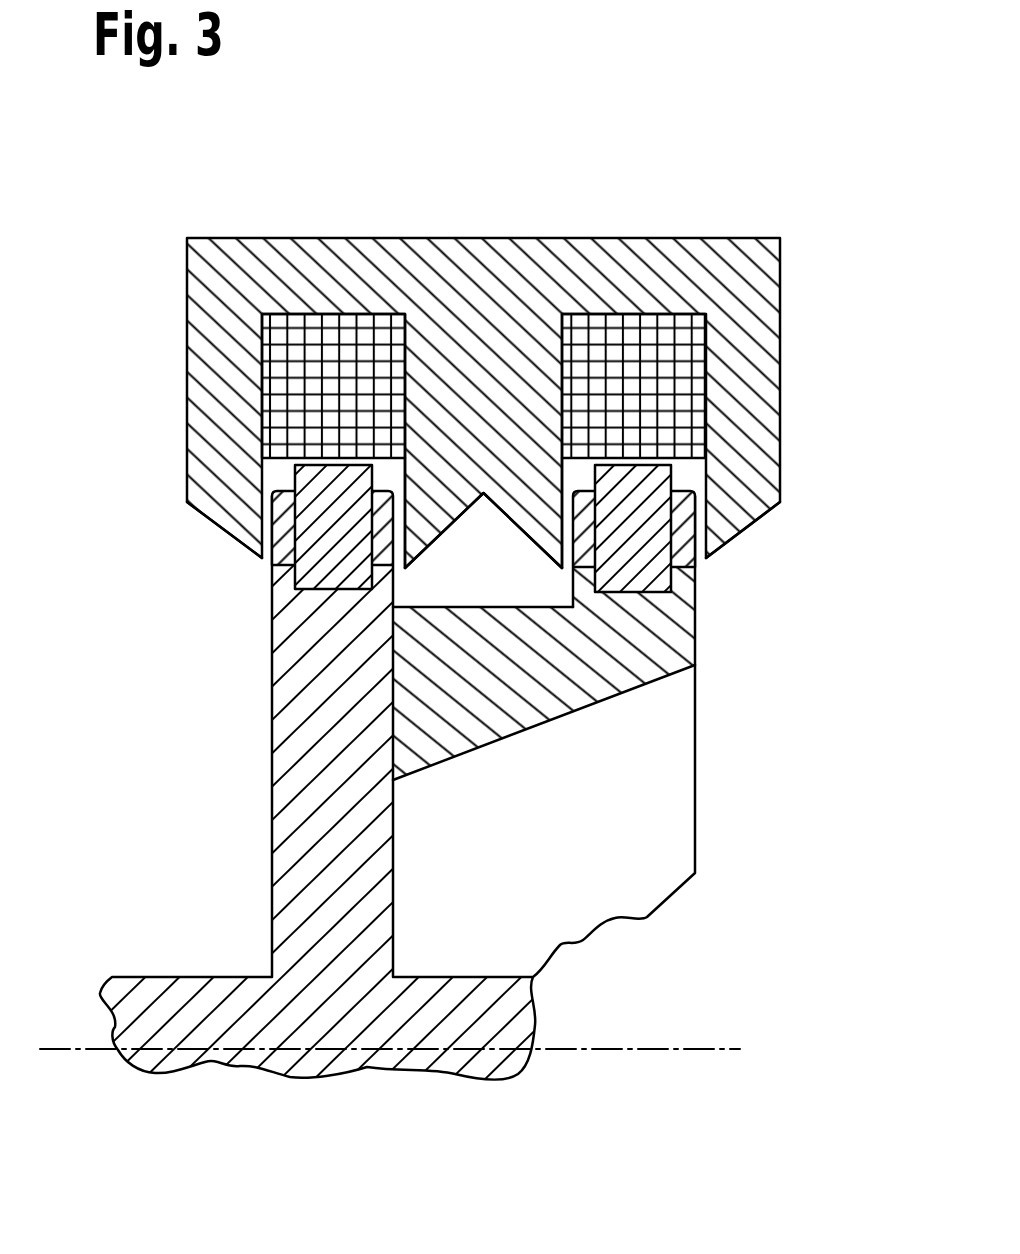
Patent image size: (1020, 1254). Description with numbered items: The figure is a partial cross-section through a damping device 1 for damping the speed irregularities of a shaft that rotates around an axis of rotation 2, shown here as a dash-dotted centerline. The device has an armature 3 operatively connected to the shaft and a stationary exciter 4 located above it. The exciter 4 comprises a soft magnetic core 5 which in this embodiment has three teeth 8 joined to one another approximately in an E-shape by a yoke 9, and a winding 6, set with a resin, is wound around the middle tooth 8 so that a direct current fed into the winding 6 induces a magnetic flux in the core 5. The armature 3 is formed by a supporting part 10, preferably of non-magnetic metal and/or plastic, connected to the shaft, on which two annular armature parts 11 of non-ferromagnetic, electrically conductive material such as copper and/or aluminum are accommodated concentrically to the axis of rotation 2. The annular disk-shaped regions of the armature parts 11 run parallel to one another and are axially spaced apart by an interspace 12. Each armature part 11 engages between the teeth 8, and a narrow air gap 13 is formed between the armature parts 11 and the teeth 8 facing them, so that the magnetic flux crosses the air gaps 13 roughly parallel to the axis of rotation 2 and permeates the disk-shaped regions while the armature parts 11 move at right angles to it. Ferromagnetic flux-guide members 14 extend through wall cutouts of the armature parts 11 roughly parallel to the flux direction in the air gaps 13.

The damping device 1 is at (858, 1140).
The axis of rotation 2 is at (722, 1048).
The armature 3 is at (397, 788).
The stationary exciter 4 is at (110, 325).
The soft magnetic core 5 is at (735, 262).
The winding 6 is at (315, 385).
The teeth 8 is at (489, 280).
The yoke 9 is at (318, 258).
The supporting part 10 is at (598, 685).
The armature parts 11 is at (312, 500).
The interspace 12 is at (502, 575).
The air gap 13 is at (405, 510).
The flux-guide member 14 is at (290, 540).